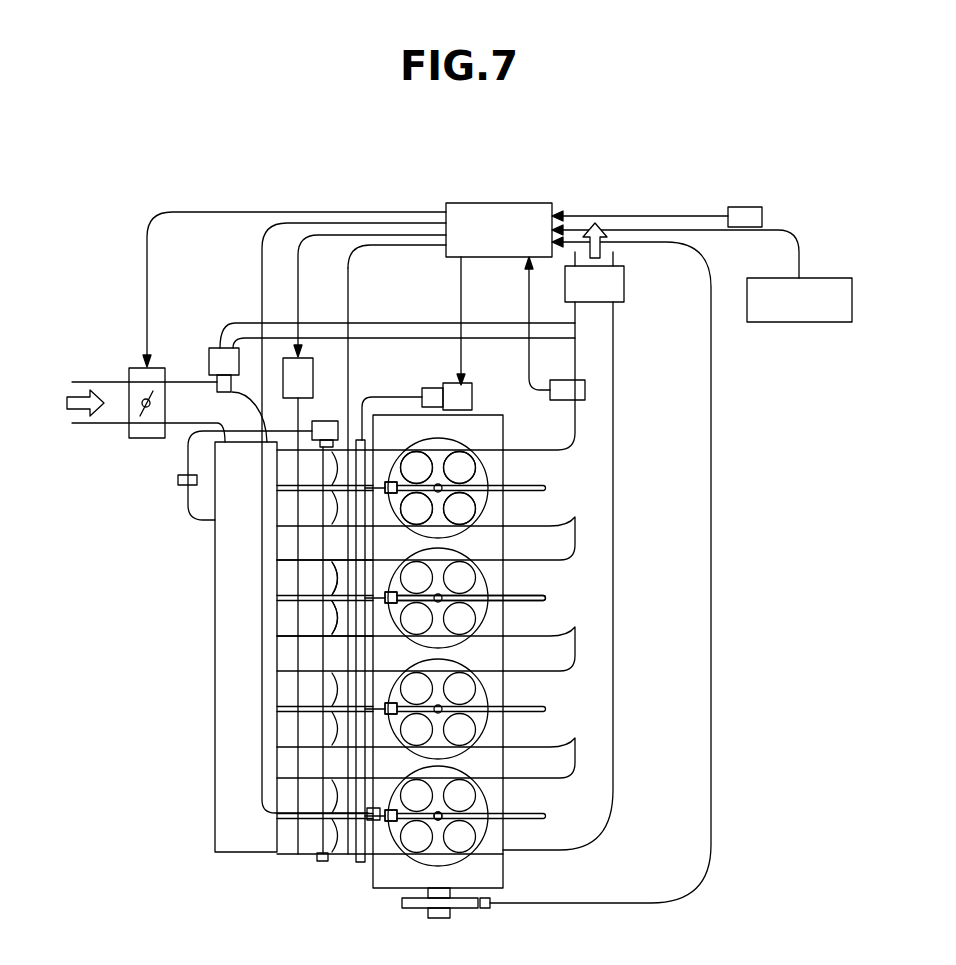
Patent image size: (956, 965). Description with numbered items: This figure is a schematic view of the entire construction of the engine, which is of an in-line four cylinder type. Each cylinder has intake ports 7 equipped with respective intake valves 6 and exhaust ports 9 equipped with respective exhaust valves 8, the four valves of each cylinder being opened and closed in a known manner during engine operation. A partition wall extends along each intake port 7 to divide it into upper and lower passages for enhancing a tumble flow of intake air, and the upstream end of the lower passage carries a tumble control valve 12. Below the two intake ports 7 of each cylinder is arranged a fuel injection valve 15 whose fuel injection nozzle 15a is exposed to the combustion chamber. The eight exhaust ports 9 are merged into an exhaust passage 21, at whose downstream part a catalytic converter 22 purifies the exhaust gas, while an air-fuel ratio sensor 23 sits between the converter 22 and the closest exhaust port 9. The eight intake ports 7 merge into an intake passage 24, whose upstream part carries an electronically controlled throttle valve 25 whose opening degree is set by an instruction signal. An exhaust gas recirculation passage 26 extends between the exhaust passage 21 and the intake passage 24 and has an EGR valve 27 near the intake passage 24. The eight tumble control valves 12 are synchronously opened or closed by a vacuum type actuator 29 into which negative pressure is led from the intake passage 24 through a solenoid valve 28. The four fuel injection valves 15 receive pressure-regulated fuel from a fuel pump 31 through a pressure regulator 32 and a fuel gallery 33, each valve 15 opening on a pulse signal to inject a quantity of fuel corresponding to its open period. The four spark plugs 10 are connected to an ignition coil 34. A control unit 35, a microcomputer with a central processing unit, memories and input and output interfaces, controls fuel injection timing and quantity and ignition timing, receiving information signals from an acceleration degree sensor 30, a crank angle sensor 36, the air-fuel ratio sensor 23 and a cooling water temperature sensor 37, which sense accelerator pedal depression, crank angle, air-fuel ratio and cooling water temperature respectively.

The intake valve 6 is at (413, 507).
The intake port 7 is at (380, 620).
The exhaust valve 8 is at (460, 505).
The exhaust port 9 is at (523, 613).
The spark plug 10 is at (440, 818).
The tumble control valve 12 is at (332, 617).
The fuel injection valve 15 is at (385, 712).
The fuel injection nozzle 15a is at (392, 822).
The exhaust passage 21 is at (602, 425).
The catalytic converter 22 is at (625, 285).
The air-fuel ratio sensor 23 is at (587, 385).
The intake passage 24 is at (190, 418).
The electronically controlled throttle valve 25 is at (137, 413).
The exhaust gas recirculation passage 26 is at (288, 333).
The EGR valve 27 is at (210, 356).
The solenoid valve 28 is at (177, 480).
The vacuum type actuator 29 is at (323, 421).
The acceleration degree sensor 30 is at (812, 278).
The fuel pump 31 is at (468, 393).
The pressure regulator 32 is at (432, 393).
The fuel gallery 33 is at (356, 650).
The ignition coil 34 is at (305, 377).
The control unit 35 is at (505, 203).
The crank angle sensor 36 is at (492, 905).
The cooling water temperature sensor 37 is at (762, 217).